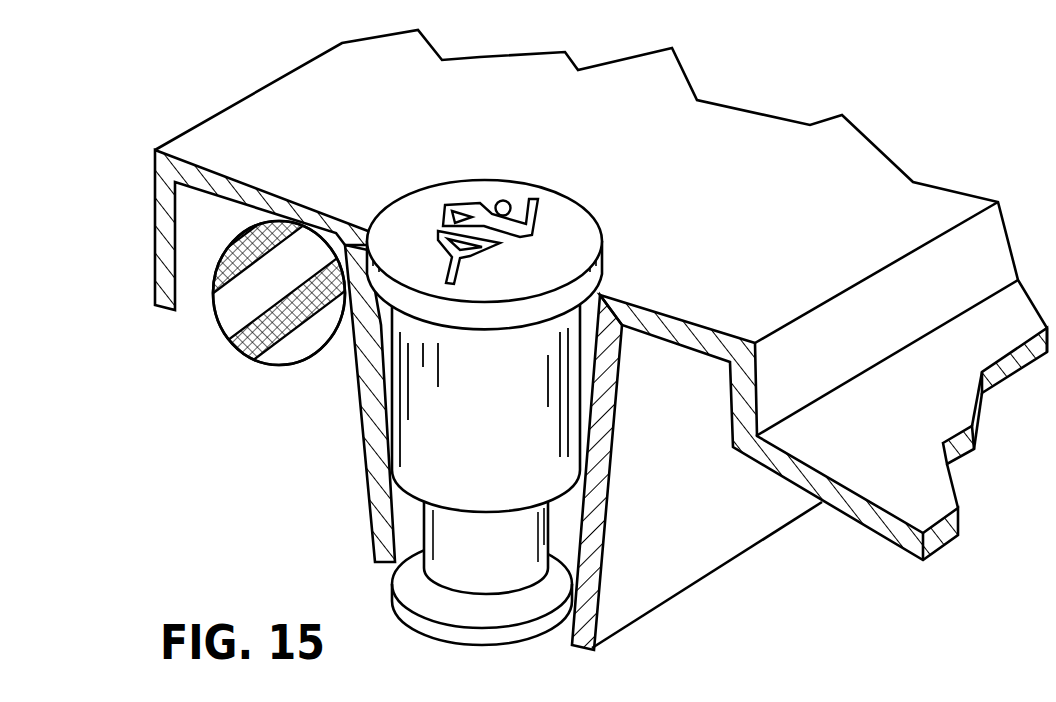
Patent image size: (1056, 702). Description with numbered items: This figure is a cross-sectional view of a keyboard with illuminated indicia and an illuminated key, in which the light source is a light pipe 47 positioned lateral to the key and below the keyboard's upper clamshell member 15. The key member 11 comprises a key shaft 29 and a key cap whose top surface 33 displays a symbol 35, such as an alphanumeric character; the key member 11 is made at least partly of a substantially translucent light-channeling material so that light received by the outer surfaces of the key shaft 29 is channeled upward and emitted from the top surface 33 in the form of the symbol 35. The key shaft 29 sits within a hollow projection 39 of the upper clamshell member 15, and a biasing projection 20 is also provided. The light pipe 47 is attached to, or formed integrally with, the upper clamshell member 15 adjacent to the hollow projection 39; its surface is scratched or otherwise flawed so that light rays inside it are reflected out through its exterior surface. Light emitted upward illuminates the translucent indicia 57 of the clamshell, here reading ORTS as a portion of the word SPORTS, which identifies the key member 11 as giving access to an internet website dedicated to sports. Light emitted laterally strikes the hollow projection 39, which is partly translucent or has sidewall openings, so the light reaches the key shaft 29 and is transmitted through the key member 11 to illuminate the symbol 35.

The key member 11 is at (603, 243).
The upper clamshell member 15 is at (155, 206).
The biasing projection 20 is at (518, 620).
The key shaft 29 is at (565, 470).
The top surface of the key cap 33 is at (476, 192).
The symbol 35 is at (527, 220).
The hollow projection 39 is at (608, 445).
The light pipe 47 is at (240, 349).
The indicia 57 is at (442, 82).